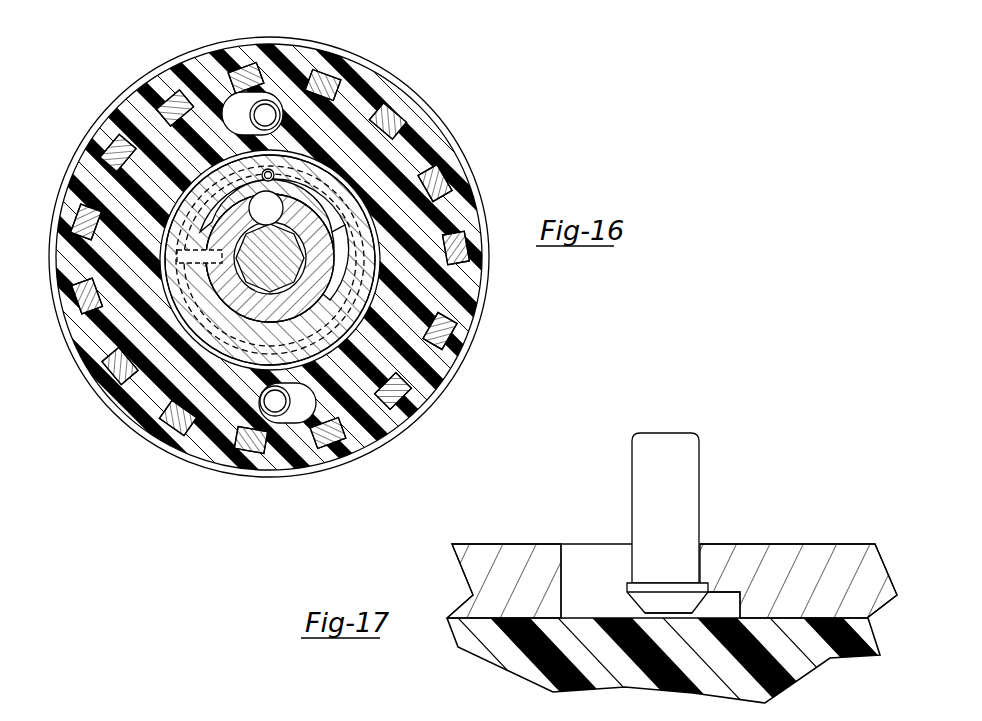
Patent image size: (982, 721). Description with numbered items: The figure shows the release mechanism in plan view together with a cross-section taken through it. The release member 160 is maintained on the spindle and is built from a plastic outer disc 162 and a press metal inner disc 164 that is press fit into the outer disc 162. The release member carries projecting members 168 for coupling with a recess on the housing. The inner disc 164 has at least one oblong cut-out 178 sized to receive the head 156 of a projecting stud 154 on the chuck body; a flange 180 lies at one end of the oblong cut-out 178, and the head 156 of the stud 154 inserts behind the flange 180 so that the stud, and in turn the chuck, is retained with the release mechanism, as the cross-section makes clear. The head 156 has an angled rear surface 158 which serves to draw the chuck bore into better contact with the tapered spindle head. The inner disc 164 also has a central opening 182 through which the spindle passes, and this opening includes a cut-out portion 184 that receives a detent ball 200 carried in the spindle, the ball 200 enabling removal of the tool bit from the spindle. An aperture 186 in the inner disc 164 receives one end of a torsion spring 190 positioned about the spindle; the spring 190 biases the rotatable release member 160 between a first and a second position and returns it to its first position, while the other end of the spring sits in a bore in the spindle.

In FIG. 16, the projecting stud 154 is at (278, 410).
In FIG. 17, the projecting stud 154 is at (695, 482).
In FIG. 17, the head 156 is at (667, 603).
In FIG. 17, the angled rear surface 158 is at (625, 590).
In FIG. 17, the release member 160 is at (650, 627).
In FIG. 16, the plastic outer disc 162 is at (460, 308).
In FIG. 17, the press metal inner disc 164 is at (473, 595).
In FIG. 16, the projecting members 168 is at (278, 208).
In FIG. 17, the oblong cut-out 178 is at (565, 578).
In FIG. 17, the flange 180 is at (743, 568).
In FIG. 16, the central opening 182 is at (213, 238).
In FIG. 16, the cut-out portion 184 is at (197, 130).
In FIG. 16, the aperture 186 is at (277, 168).
In FIG. 16, the torsion spring 190 is at (356, 250).
In FIG. 16, the detent ball 200 is at (350, 225).